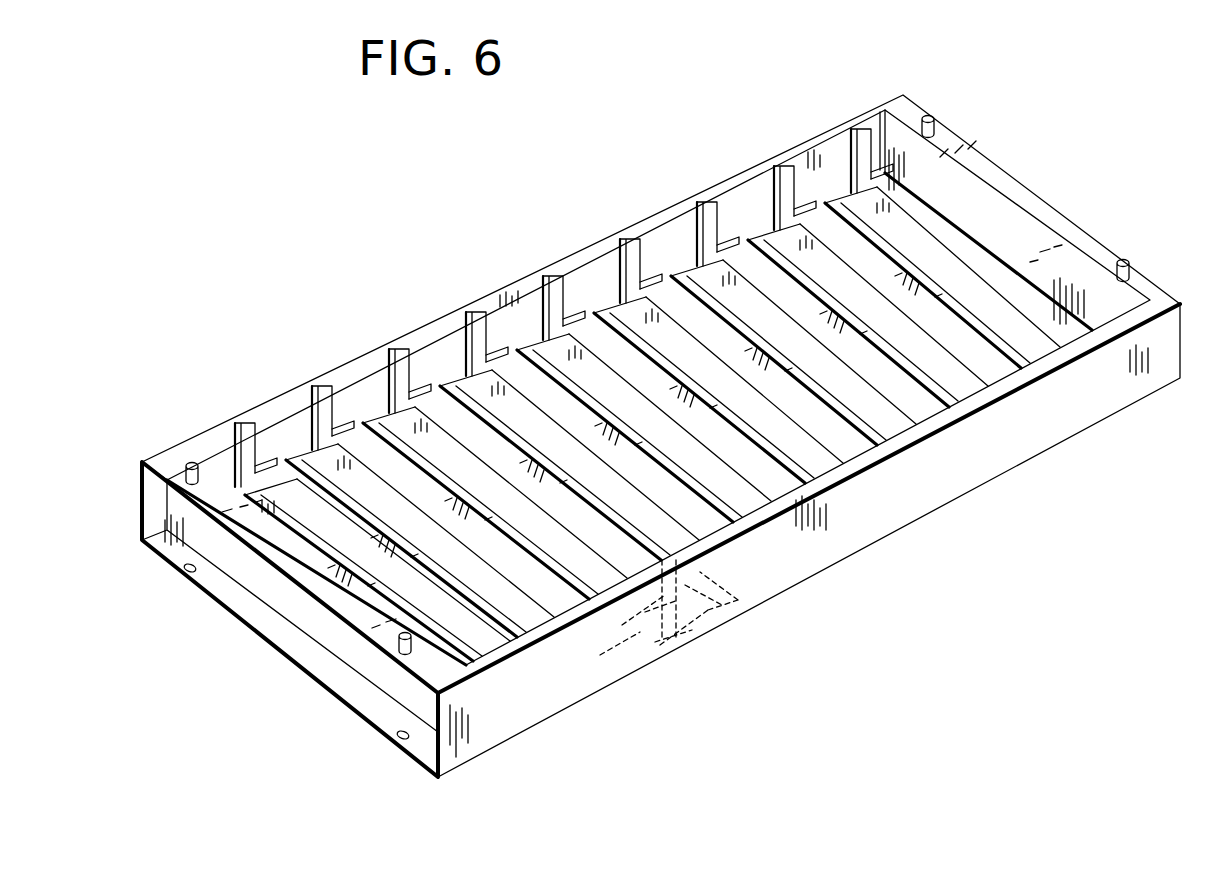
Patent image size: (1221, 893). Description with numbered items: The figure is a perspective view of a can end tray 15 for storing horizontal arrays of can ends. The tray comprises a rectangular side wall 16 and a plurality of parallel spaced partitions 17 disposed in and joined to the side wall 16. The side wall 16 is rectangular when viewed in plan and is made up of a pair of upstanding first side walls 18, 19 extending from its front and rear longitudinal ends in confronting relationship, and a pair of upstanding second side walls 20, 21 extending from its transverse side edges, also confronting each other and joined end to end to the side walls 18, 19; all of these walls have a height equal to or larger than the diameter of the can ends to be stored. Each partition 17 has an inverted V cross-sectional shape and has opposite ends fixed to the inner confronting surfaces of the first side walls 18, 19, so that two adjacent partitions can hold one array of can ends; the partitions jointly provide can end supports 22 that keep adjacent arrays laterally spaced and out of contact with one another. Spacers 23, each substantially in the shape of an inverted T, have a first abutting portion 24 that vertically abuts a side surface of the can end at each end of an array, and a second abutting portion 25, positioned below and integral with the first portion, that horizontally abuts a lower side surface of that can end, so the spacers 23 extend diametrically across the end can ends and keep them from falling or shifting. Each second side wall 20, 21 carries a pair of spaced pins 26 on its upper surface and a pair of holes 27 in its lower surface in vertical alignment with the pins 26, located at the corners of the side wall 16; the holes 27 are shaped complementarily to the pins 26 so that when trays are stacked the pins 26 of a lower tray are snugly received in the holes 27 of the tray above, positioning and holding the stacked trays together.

The can end tray 15 is at (688, 150).
The rectangular side wall 16 is at (452, 315).
The partition 17 is at (355, 442).
The upstanding side wall 18 is at (1065, 398).
The upstanding side wall 19 is at (522, 296).
The upstanding side wall 20 is at (370, 652).
The upstanding side wall 21 is at (1050, 268).
The can end support 22 is at (725, 285).
The spacer 23 is at (405, 360).
The first abutting portion 24 is at (372, 440).
The second abutting portion 25 is at (262, 490).
The pin 26 is at (188, 463).
The hole 27 is at (186, 572).